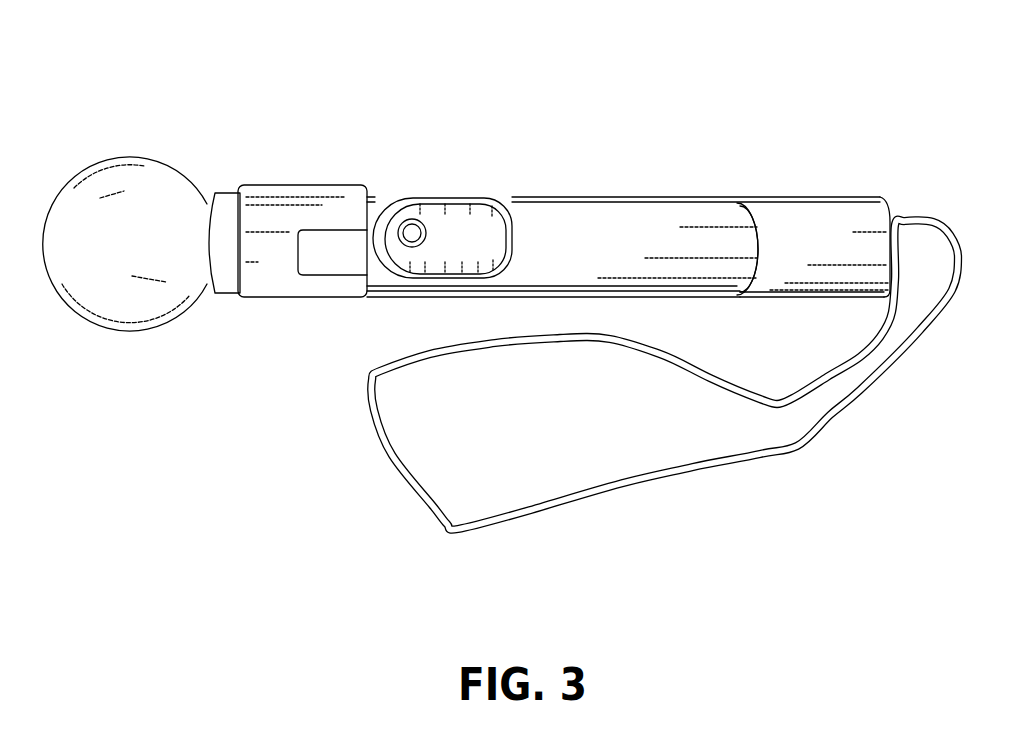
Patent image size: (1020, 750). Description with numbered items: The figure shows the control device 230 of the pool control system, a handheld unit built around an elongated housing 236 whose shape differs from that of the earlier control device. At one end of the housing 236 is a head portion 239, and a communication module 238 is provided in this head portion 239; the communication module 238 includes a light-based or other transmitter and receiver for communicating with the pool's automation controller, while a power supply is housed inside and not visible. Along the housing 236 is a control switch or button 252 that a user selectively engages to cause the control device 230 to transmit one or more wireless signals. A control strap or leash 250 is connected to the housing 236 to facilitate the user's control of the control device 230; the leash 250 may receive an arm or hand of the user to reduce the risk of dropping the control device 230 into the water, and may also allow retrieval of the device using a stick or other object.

The control device 230 is at (573, 78).
The elongated housing 236 is at (616, 213).
The communication module 238 is at (84, 186).
The head portion 239 is at (155, 183).
The control strap or leash 250 is at (636, 480).
The control switch or button 252 is at (443, 218).